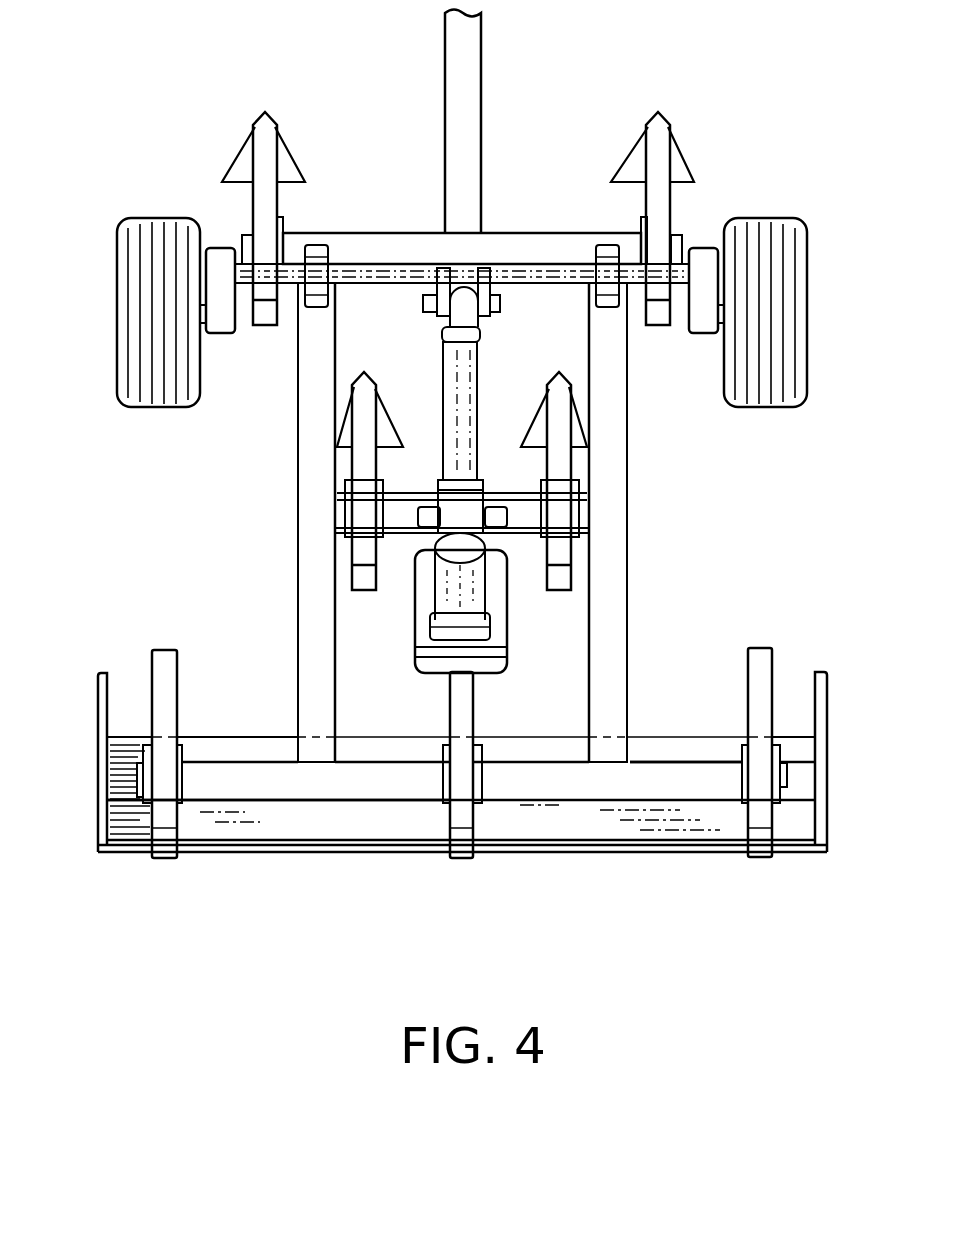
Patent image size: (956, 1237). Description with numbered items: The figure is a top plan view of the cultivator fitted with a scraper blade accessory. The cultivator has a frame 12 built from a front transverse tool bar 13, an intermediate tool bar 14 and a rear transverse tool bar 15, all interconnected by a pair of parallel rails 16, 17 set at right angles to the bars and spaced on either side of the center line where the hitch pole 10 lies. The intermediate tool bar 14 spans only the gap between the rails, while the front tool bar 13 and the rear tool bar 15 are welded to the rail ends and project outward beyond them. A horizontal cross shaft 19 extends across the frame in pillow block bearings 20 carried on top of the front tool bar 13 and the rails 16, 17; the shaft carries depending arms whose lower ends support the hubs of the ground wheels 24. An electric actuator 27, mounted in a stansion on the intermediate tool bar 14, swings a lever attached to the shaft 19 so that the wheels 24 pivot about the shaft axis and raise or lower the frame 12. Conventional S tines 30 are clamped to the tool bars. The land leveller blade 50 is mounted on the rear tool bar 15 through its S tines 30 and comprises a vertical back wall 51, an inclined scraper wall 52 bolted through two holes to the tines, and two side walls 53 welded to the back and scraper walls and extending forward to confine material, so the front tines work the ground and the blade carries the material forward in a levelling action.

The hitch pole 10 is at (438, 87).
The frame 12 is at (297, 455).
The front transverse tool bar 13 is at (513, 243).
The intermediate transverse tool bar 14 is at (402, 500).
The rear transverse tool bar 15 is at (670, 780).
The rail 16 is at (305, 470).
The rail 17 is at (610, 597).
The cross shaft 19 is at (403, 282).
The pillow block bearings 20 is at (603, 307).
The ground wheel 24 is at (137, 327).
The electric actuator 27 is at (482, 399).
The S tines 30 is at (165, 642).
The land leveller blade 50 is at (286, 868).
The vertical back wall 51 is at (598, 828).
The inclined scraper wall 52 is at (255, 742).
The side walls 53 is at (98, 705).